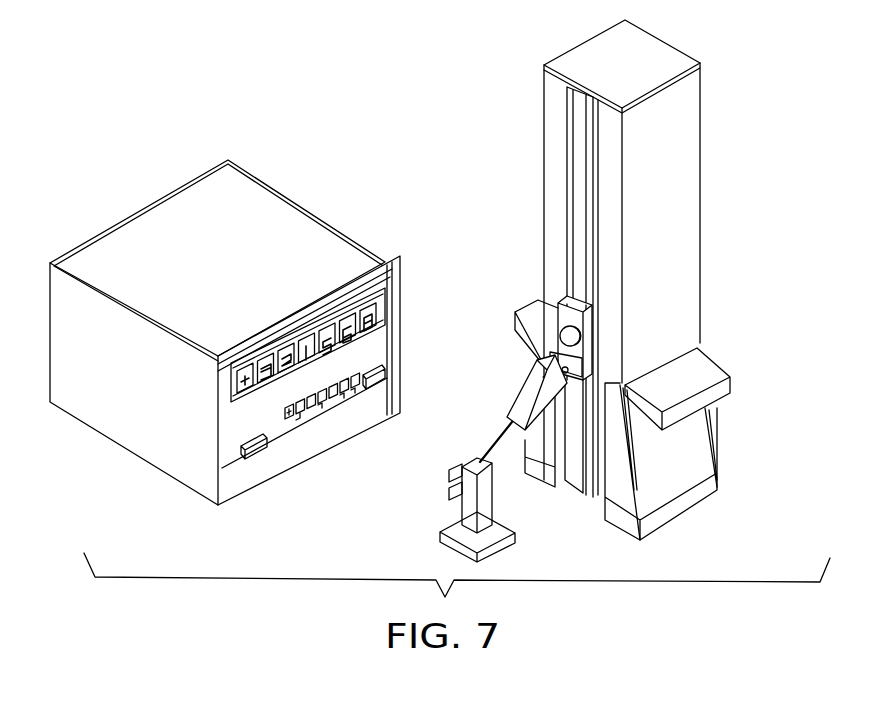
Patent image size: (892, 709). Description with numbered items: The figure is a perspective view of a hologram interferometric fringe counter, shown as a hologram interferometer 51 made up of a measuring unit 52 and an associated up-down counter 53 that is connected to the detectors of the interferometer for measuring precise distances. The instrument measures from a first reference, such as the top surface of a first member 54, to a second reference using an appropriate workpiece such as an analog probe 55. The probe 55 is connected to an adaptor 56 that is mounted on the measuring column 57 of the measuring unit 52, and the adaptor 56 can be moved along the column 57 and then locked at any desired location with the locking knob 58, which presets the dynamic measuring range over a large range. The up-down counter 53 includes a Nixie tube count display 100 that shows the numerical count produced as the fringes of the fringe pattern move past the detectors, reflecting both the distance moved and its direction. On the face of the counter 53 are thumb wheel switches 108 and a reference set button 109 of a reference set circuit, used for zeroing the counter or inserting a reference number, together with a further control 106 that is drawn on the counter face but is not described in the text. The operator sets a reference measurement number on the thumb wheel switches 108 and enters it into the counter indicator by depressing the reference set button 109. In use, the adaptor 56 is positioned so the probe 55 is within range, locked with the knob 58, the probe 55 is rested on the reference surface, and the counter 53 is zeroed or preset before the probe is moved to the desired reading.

The hologram interferometer 51 is at (133, 83).
The up-down counter 53 is at (328, 209).
The Nixie tube count display 100 is at (372, 305).
The push button 106 is at (252, 449).
The thumb wheel switches 108 is at (318, 421).
The reference set button 109 is at (376, 386).
The measuring unit 52 is at (712, 232).
The measuring column 57 is at (572, 120).
The adaptor 56 is at (562, 312).
The locking knob 58 is at (568, 338).
The analog probe 55 is at (503, 436).
The first member 54 is at (490, 498).